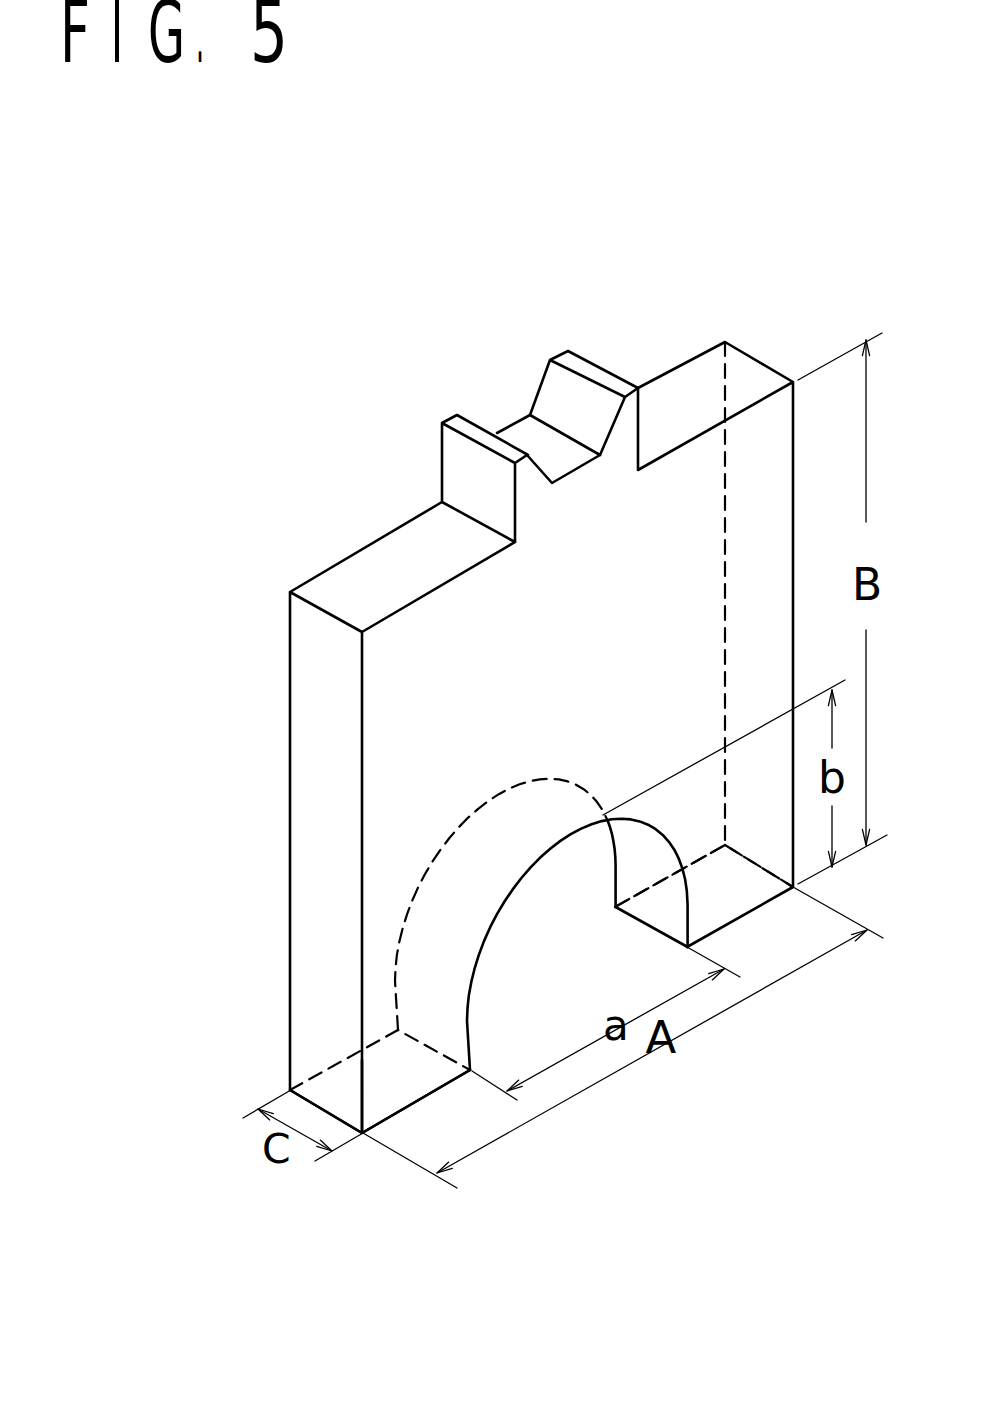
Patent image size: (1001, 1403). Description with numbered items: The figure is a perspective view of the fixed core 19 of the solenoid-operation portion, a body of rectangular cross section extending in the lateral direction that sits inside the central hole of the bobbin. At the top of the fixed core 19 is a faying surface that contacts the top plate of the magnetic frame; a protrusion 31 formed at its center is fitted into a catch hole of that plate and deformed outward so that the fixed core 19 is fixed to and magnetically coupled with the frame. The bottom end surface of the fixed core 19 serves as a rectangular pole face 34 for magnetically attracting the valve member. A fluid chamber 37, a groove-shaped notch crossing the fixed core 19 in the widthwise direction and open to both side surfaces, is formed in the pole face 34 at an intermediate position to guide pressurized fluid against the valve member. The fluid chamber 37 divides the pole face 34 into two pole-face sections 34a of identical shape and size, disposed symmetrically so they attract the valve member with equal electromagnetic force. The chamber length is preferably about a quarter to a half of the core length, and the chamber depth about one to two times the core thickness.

The fixed core 19 is at (300, 700).
The protrusion 31 is at (467, 427).
The fluid chamber 37 is at (558, 938).
The pole face 34 is at (362, 1152).
The pole-face section 34a is at (393, 1083).